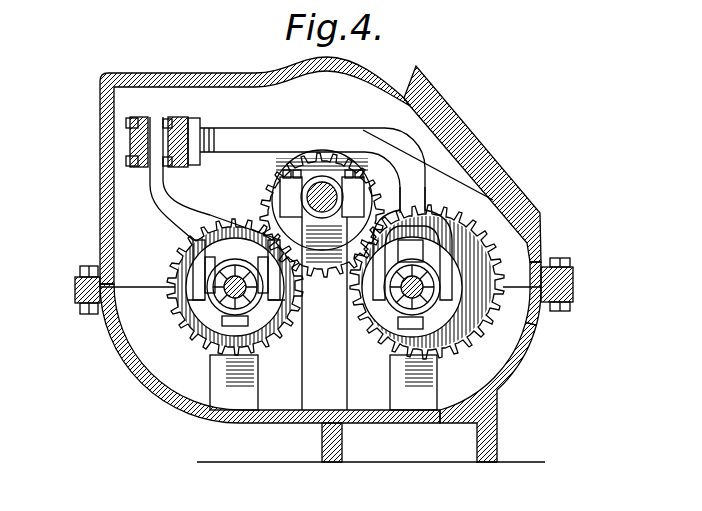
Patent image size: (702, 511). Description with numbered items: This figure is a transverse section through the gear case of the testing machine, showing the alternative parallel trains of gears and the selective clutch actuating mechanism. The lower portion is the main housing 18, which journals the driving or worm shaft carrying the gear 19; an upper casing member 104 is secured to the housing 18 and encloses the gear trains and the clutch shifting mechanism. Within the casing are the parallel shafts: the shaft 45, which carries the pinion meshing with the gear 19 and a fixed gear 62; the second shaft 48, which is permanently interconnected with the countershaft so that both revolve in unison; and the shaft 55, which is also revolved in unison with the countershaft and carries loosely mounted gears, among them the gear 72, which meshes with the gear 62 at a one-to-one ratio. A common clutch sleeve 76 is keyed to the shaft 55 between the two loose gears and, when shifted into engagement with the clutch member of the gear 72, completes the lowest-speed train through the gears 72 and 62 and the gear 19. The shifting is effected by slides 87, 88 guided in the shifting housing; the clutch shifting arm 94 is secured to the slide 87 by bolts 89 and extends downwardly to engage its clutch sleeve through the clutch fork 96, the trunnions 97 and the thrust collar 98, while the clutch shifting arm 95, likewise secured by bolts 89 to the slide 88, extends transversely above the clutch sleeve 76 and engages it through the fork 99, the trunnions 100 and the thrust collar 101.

The housing 18 is at (120, 343).
The gear 19 is at (448, 208).
The shaft 45 is at (322, 190).
The second shaft 48 is at (212, 312).
The shaft 55 is at (500, 357).
The gear 62 is at (330, 170).
The gear 72 is at (490, 318).
The clutch sleeve 76 is at (455, 348).
The slide 87 is at (140, 117).
The slide 88 is at (183, 113).
The bolts 89 is at (126, 158).
The clutch shifting arm 94 is at (200, 208).
The clutch shifting arm 95 is at (235, 141).
The clutch fork 96 is at (207, 260).
The trunnions 97 is at (183, 292).
The thrust collar 98 is at (238, 330).
The fork 99 is at (460, 213).
The trunnions 100 is at (507, 257).
The thrust collar 101 is at (352, 323).
The upper casing member 104 is at (398, 59).